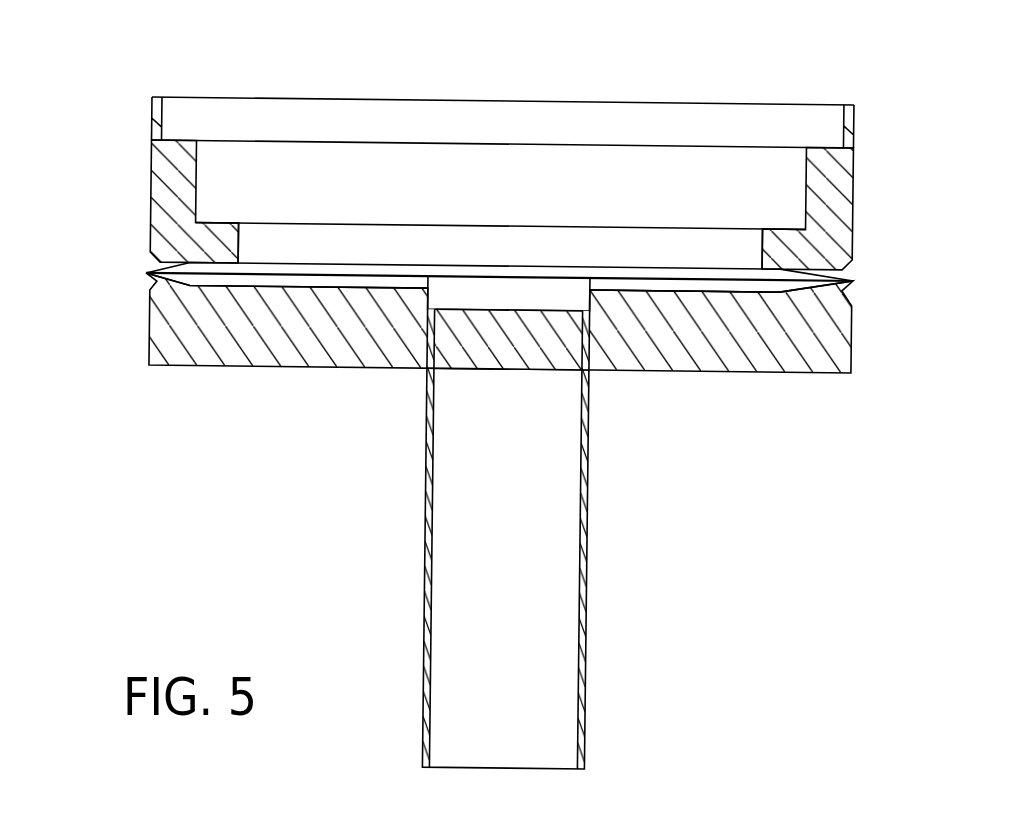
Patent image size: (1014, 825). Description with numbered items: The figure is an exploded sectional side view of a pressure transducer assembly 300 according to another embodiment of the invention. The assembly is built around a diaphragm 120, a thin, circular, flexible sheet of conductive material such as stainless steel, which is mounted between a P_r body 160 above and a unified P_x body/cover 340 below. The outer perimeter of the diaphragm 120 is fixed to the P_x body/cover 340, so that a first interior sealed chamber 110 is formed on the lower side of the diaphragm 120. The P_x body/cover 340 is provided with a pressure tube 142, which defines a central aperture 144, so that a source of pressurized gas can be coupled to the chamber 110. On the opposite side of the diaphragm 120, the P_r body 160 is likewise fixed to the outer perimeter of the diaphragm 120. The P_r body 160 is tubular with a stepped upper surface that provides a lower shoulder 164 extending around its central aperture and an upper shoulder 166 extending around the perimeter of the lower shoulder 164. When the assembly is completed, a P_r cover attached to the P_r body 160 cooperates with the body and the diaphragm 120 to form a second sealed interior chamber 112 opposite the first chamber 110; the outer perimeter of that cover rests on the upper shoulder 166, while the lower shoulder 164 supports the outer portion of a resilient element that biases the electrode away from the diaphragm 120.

The transducer assembly 300 is at (97, 344).
The P_x body/cover 340 is at (856, 342).
The P_r body 160 is at (143, 193).
The upper shoulder 166 is at (181, 138).
The lower shoulder 164 is at (215, 217).
The second sealed interior chamber 112 is at (442, 197).
The diaphragm 120 is at (332, 262).
The first interior sealed chamber 110 is at (672, 293).
The pressure tube 142 is at (588, 573).
The central aperture 144 is at (538, 593).